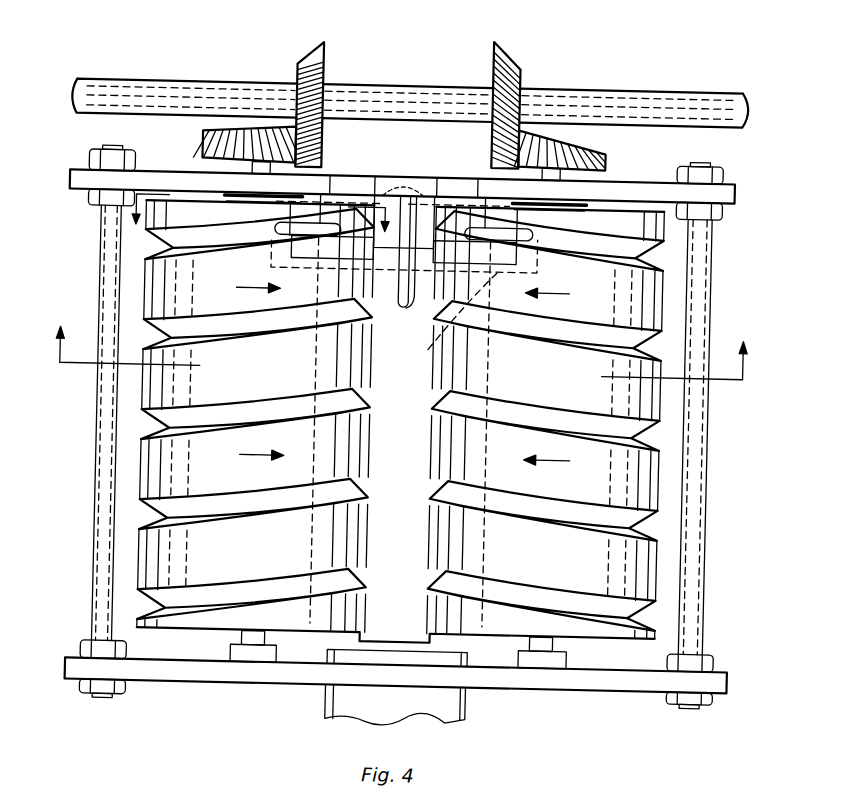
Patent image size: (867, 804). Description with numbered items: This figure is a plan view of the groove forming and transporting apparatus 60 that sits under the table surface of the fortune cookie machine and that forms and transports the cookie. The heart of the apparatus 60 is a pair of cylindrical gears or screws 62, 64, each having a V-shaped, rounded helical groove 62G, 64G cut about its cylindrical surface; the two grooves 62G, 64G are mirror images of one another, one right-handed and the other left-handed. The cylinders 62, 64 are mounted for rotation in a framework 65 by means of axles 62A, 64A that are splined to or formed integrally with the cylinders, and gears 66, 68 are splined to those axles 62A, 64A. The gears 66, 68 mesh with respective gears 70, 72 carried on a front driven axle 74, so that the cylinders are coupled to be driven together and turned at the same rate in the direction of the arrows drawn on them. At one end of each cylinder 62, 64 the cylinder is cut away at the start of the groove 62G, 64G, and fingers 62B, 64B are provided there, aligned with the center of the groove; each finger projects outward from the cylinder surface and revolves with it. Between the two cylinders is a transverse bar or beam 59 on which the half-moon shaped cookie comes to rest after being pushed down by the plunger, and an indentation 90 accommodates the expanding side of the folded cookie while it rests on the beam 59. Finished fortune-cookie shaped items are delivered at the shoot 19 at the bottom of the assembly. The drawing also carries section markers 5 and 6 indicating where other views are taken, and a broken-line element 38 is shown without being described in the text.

The groove forming and transporting apparatus 60 is at (387, 50).
The front driven axle 74 is at (626, 92).
The gear 70 is at (302, 60).
The gear 72 is at (497, 63).
The gear 66 is at (212, 152).
The gear 68 is at (591, 149).
The axle 64A is at (243, 171).
The axle 62A is at (556, 170).
The finger 62B is at (319, 229).
The finger 64B is at (473, 228).
The cylindrical gear or screw 62 is at (342, 423).
The cylindrical gear or screw 64 is at (597, 424).
The groove 62G is at (146, 526).
The groove 64G is at (636, 527).
The framework 65 is at (606, 686).
The shoot 19 is at (454, 702).
The transverse bar or beam 59 is at (399, 268).
The blade (hidden) 38 is at (429, 346).
The indentation 90 is at (398, 177).
The section line 5- 5 is at (256, 222).
The section line 6- 6 is at (401, 341).